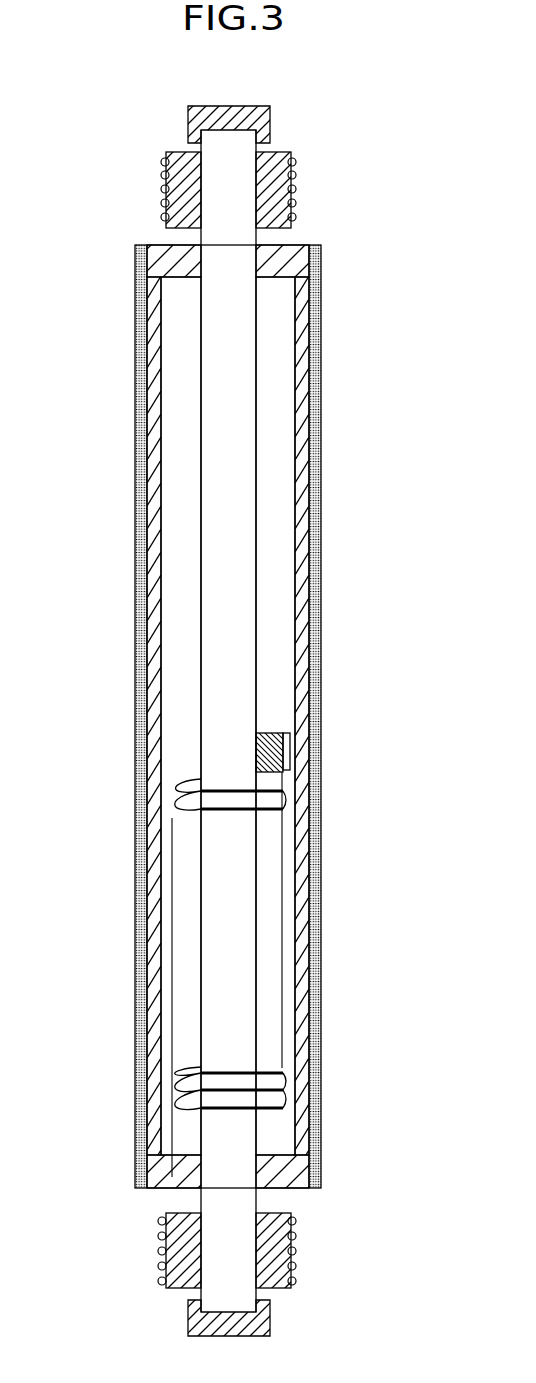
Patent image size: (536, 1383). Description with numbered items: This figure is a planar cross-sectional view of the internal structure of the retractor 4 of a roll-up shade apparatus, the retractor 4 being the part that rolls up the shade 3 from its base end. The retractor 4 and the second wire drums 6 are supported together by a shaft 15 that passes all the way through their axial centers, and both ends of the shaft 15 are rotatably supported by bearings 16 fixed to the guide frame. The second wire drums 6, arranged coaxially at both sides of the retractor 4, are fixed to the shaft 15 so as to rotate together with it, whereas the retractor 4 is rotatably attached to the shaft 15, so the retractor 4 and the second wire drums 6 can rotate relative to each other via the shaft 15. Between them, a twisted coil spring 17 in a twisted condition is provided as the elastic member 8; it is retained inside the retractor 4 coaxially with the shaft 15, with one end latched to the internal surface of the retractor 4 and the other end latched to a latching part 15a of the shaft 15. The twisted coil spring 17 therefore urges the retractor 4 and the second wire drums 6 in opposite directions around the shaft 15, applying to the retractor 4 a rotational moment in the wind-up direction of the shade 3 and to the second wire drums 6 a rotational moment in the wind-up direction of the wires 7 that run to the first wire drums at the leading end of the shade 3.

The shade 3 is at (135, 466).
The retractor 4 is at (137, 522).
The second wire drum 6 is at (281, 151).
The wire 7 is at (166, 175).
The elastic member 8 is at (296, 974).
The shaft 15 is at (215, 1202).
The latching part 15a is at (276, 733).
The bearing 16 is at (188, 121).
The twisted coil spring 17 is at (282, 1068).